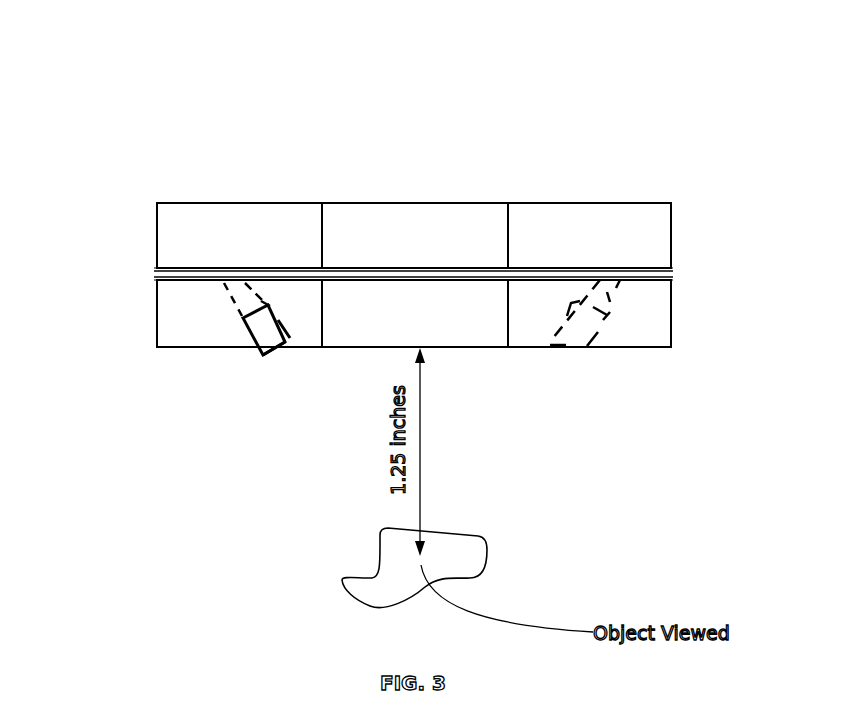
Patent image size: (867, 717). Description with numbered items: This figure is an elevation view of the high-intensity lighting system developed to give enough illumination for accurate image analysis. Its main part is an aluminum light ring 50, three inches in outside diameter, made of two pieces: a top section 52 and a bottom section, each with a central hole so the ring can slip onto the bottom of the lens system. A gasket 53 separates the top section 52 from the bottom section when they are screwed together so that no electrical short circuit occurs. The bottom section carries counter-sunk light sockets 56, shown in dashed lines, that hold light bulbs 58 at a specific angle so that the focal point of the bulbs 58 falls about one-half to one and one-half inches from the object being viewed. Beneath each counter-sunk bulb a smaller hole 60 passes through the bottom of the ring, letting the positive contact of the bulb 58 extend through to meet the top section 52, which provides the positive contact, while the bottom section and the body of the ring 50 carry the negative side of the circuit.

The light ring 50 is at (323, 163).
The top section 52 is at (157, 220).
The gasket 53 is at (445, 202).
The light socket 56 is at (240, 320).
The light bulb 58 is at (263, 355).
The smaller hole 60 is at (235, 295).